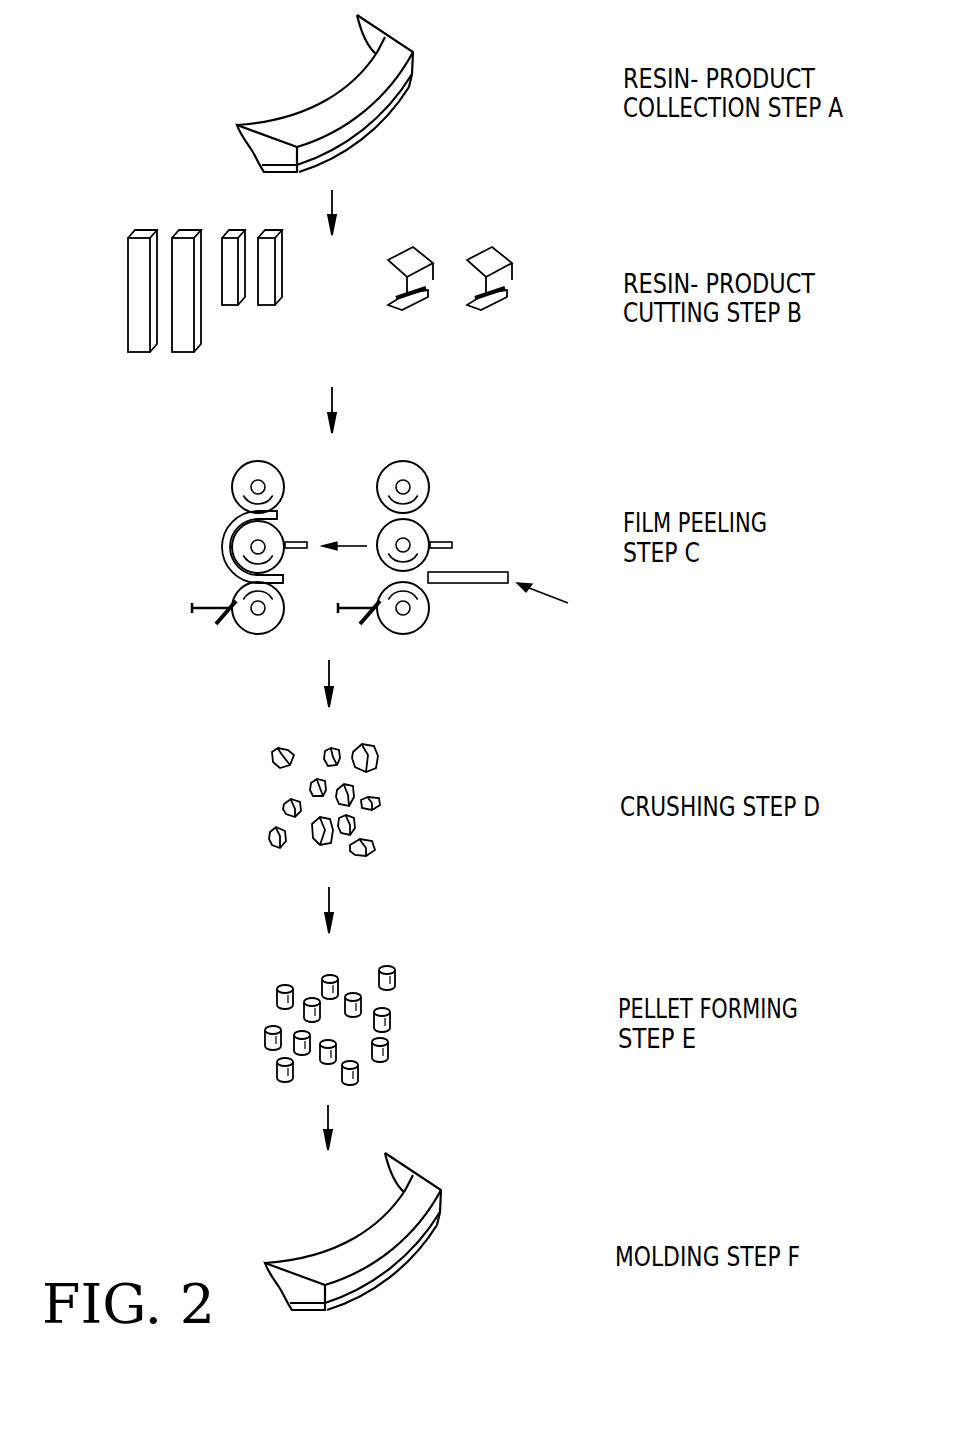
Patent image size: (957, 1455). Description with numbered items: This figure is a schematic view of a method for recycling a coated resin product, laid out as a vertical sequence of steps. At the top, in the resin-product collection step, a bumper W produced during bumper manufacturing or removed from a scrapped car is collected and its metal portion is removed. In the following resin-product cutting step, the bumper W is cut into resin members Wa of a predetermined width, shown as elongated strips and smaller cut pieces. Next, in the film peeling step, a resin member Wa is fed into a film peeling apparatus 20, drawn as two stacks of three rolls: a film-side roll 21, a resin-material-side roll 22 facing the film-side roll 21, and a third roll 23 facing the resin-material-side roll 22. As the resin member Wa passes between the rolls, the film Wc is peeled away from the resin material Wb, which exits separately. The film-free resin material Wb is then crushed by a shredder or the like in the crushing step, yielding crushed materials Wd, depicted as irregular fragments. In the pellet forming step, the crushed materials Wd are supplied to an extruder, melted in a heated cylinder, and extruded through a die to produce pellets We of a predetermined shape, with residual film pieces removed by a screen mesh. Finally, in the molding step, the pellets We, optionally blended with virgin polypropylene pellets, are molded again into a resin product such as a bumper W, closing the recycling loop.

The bumper W is at (393, 50).
The resin member Wa is at (265, 278).
The resin material Wb is at (228, 546).
The film Wc is at (216, 606).
The crushed materials Wd is at (378, 752).
The pellets We is at (398, 981).
The film peeling apparatus 20 is at (430, 432).
The film-side roll 21 is at (258, 627).
The resin-material-side roll 22 is at (273, 542).
The third roll 23 is at (245, 476).